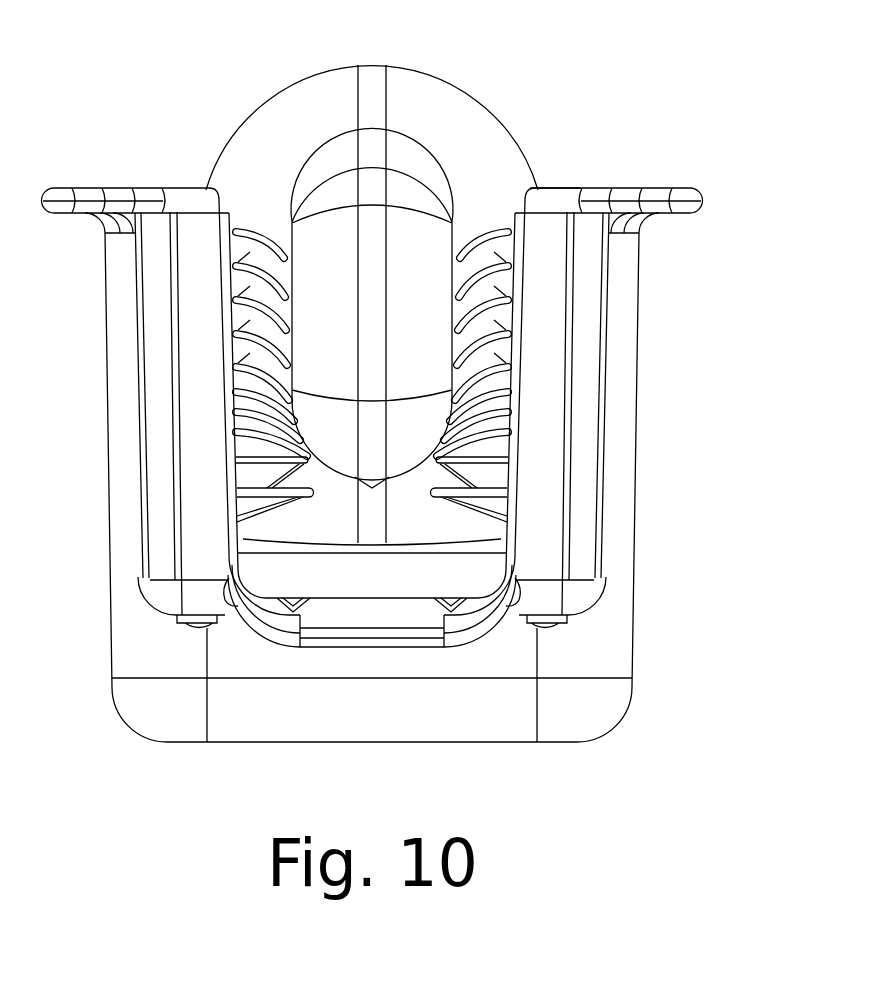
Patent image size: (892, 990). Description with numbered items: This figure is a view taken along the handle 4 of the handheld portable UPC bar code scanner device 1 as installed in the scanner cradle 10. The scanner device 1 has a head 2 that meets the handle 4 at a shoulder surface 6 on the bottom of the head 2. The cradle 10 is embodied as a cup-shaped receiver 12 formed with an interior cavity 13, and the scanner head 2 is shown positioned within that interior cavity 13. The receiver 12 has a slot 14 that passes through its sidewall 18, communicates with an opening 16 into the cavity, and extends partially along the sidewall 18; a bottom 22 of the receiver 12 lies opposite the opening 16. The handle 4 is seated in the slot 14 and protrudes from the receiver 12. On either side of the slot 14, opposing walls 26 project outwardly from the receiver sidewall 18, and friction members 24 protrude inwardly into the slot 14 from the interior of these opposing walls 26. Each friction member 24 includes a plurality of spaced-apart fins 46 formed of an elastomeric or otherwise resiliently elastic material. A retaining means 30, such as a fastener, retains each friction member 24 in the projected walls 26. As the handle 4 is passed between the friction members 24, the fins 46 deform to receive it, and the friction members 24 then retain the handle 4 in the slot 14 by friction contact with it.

The handheld portable UPC bar code scanner device 1 is at (449, 83).
The head 2 is at (425, 110).
The handle 4 is at (340, 307).
The shoulder surface 6 is at (476, 220).
The scanner cradle 10 is at (100, 187).
The receiver 12 is at (633, 667).
The interior cavity 13 is at (558, 183).
The slot 14 is at (248, 230).
The opening 16 is at (598, 187).
The sidewall 18 is at (165, 507).
The bottom 22 is at (508, 742).
The friction members 24 is at (257, 243).
The opposing walls 26 is at (173, 390).
The retaining means 30 is at (185, 628).
The fins 46 is at (277, 325).